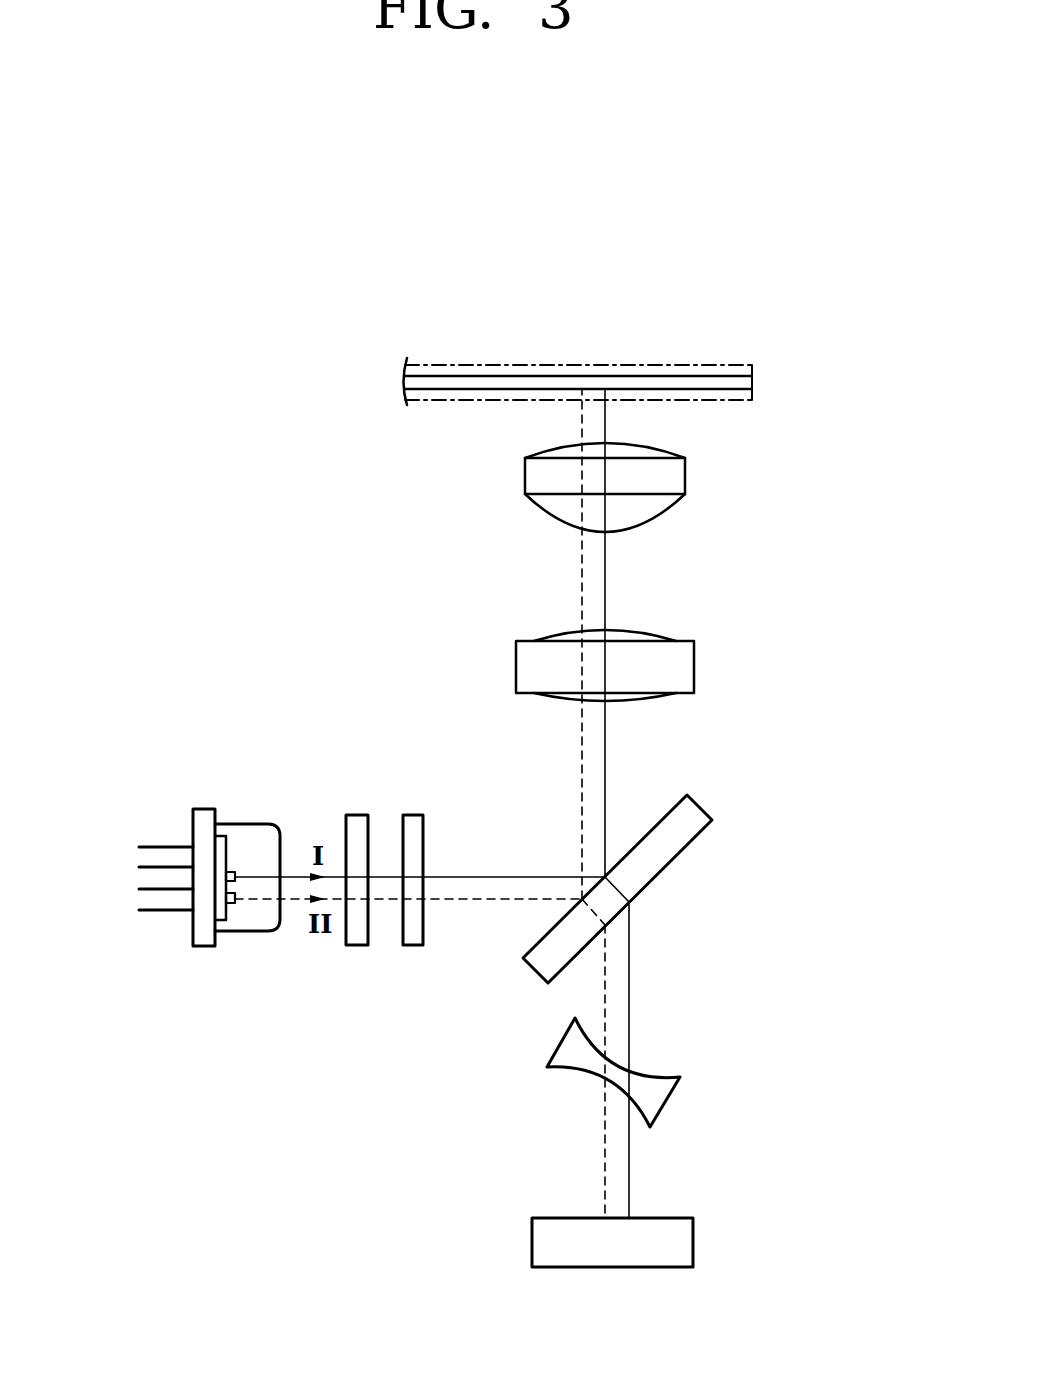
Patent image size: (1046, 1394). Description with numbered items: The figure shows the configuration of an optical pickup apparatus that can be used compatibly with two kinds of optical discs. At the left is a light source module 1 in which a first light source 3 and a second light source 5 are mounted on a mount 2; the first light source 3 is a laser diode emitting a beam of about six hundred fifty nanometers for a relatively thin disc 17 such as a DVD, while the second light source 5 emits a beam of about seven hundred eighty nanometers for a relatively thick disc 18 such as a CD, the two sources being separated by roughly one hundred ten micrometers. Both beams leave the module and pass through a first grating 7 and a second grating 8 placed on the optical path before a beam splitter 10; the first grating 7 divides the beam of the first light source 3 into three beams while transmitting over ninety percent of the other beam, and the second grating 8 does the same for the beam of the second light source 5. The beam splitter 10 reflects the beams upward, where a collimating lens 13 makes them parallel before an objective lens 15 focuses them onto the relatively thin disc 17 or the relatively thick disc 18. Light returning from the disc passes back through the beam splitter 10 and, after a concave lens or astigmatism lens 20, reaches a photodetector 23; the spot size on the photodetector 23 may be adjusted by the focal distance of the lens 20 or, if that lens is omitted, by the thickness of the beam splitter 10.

The light source module 1 is at (146, 801).
The mount 2 is at (220, 922).
The first light source 3 is at (231, 872).
The second light source 5 is at (232, 905).
The first grating 7 is at (360, 822).
The second grating 8 is at (416, 822).
The beam splitter 10 is at (665, 857).
The collimating lens 13 is at (694, 667).
The objective lens 15 is at (685, 477).
The relatively thin disc 17 is at (745, 382).
The relatively thick disc 18 is at (611, 364).
The concave lens or astigmatism lens 20 is at (650, 1078).
The photodetector 23 is at (645, 1260).